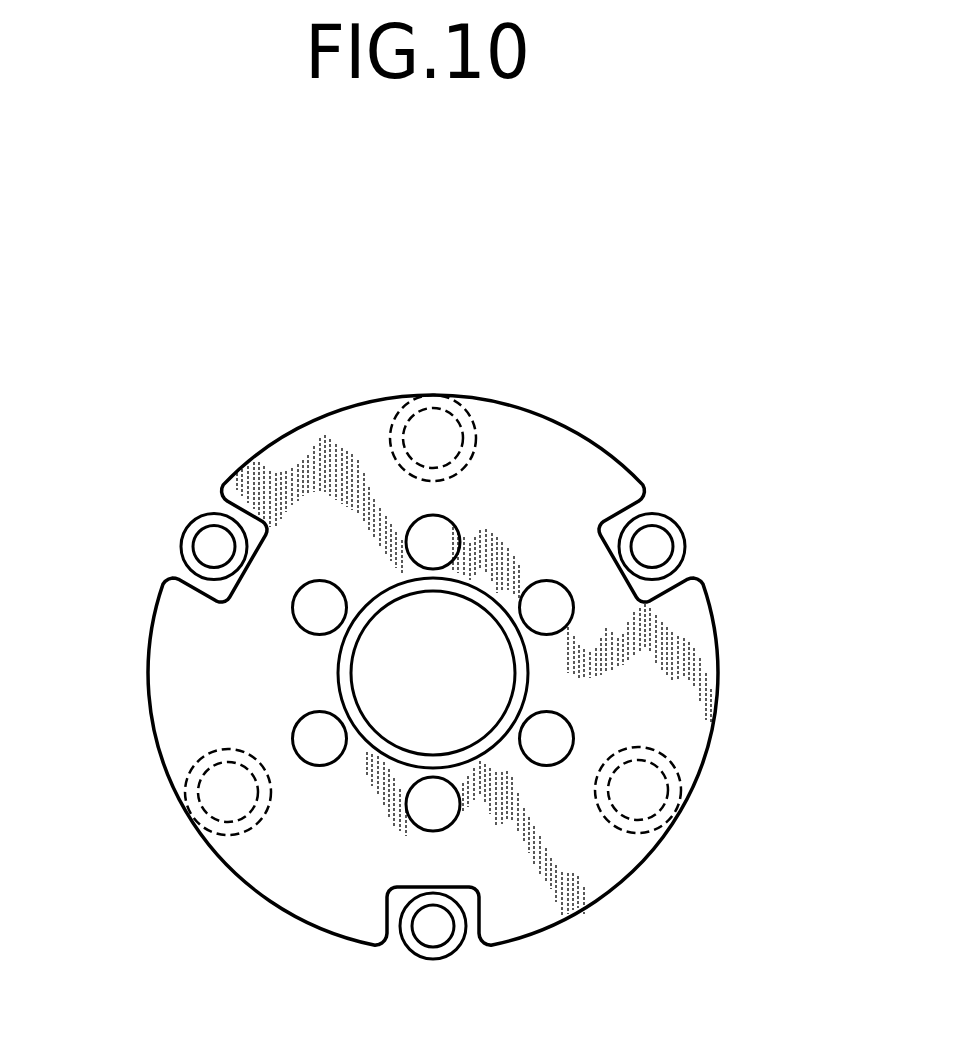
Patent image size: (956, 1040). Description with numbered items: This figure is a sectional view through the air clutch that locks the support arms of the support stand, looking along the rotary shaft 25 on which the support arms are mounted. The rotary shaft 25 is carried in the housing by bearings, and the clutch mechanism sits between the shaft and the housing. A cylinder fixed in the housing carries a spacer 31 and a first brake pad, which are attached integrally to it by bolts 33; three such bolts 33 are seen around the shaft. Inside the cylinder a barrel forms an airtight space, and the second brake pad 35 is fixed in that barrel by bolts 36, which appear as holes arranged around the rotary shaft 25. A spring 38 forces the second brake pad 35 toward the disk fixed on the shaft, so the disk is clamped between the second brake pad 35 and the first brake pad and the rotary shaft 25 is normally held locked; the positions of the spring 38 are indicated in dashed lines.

The rotary shaft 25 is at (422, 708).
The spacer 31 is at (686, 547).
The bolts 33 is at (653, 540).
The second brake pad 35 is at (730, 694).
The bolts 36 is at (292, 614).
The spring 38 is at (410, 405).